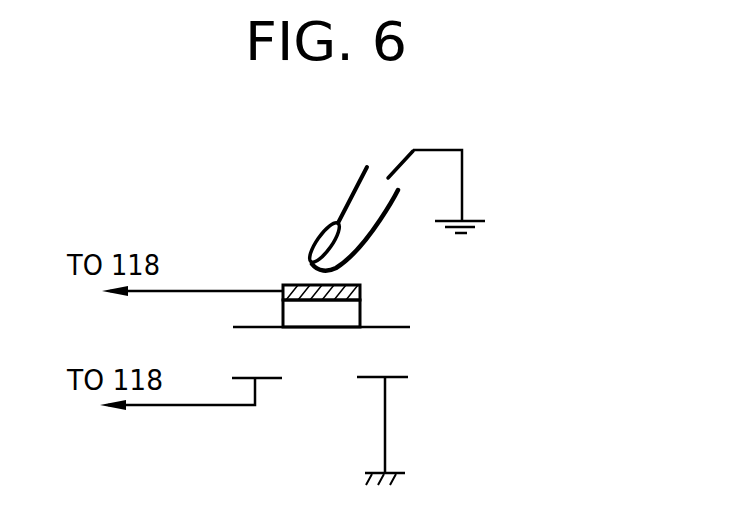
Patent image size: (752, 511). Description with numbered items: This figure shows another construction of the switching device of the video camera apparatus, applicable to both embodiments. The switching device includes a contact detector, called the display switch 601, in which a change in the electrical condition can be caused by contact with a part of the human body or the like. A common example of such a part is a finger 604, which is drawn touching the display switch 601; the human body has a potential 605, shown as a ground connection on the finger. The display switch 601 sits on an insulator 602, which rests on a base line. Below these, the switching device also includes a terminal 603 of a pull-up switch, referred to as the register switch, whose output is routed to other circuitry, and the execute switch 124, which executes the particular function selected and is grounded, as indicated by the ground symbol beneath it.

The finger 604 is at (344, 203).
The potential 605 is at (481, 229).
The contact detector (display switch) 601 is at (362, 293).
The insulator 602 is at (362, 312).
The terminal of a pull-up switch (register switch) 603 is at (276, 386).
The function executing switch (execute switch) 124 is at (400, 481).